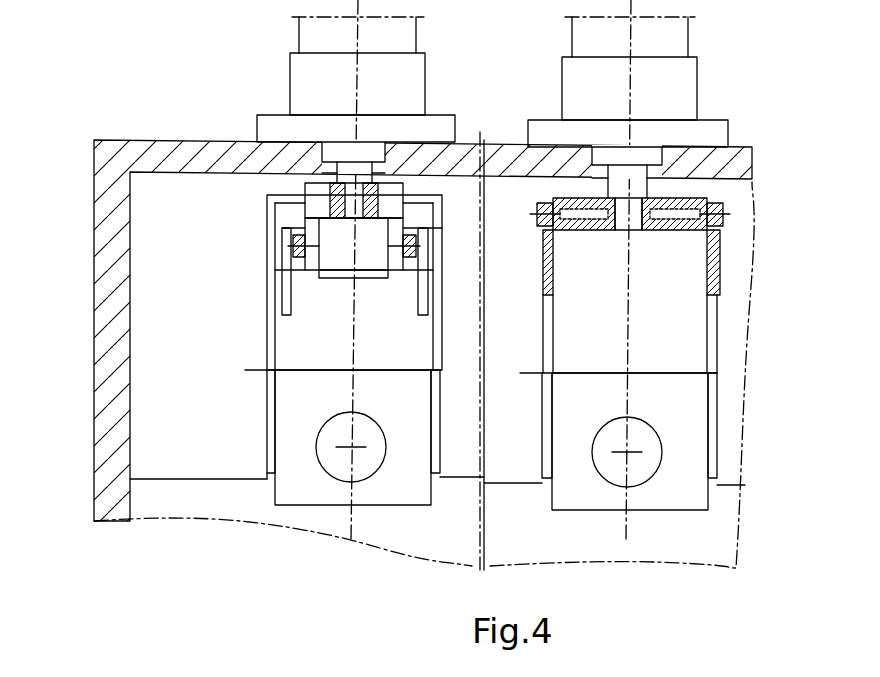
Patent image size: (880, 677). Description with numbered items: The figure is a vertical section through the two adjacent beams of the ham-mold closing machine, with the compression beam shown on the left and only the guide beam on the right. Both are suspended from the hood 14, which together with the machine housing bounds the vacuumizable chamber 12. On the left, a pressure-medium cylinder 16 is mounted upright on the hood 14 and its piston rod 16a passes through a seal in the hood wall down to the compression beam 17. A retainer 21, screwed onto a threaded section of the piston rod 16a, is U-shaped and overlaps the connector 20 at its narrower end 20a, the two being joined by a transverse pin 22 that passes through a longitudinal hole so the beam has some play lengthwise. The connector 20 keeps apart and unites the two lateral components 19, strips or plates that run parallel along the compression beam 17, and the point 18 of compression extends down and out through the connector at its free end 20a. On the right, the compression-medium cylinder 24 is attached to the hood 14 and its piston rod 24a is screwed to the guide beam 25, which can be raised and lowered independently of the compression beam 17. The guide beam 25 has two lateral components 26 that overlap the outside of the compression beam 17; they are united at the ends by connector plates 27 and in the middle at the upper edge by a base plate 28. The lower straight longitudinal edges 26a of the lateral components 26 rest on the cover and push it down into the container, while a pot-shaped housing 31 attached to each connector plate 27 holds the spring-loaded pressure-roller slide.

The vacuumizable chamber 12 is at (162, 458).
The hood 14 is at (120, 249).
The pressure-medium cylinder 16 is at (318, 86).
The piston rod 16a is at (292, 180).
The compression beam 17 is at (306, 288).
The point of compression 18 is at (336, 282).
The lateral component 19 is at (283, 291).
The connector 20 is at (296, 263).
The narrower end of connector 20a is at (364, 282).
The retainer 21 is at (320, 209).
The transverse pin 22 is at (398, 250).
The compression-medium cylinder 24 is at (660, 95).
The piston rod of compression-medium cylinder 24a is at (622, 183).
The guide beam 25 is at (452, 325).
The lateral component of guide beam 26 is at (268, 405).
The lower straight longitudinal edge 26a is at (268, 479).
The connector plate 27 is at (410, 478).
The base plate 28 is at (645, 232).
The pot-shaped housing 31 is at (337, 432).